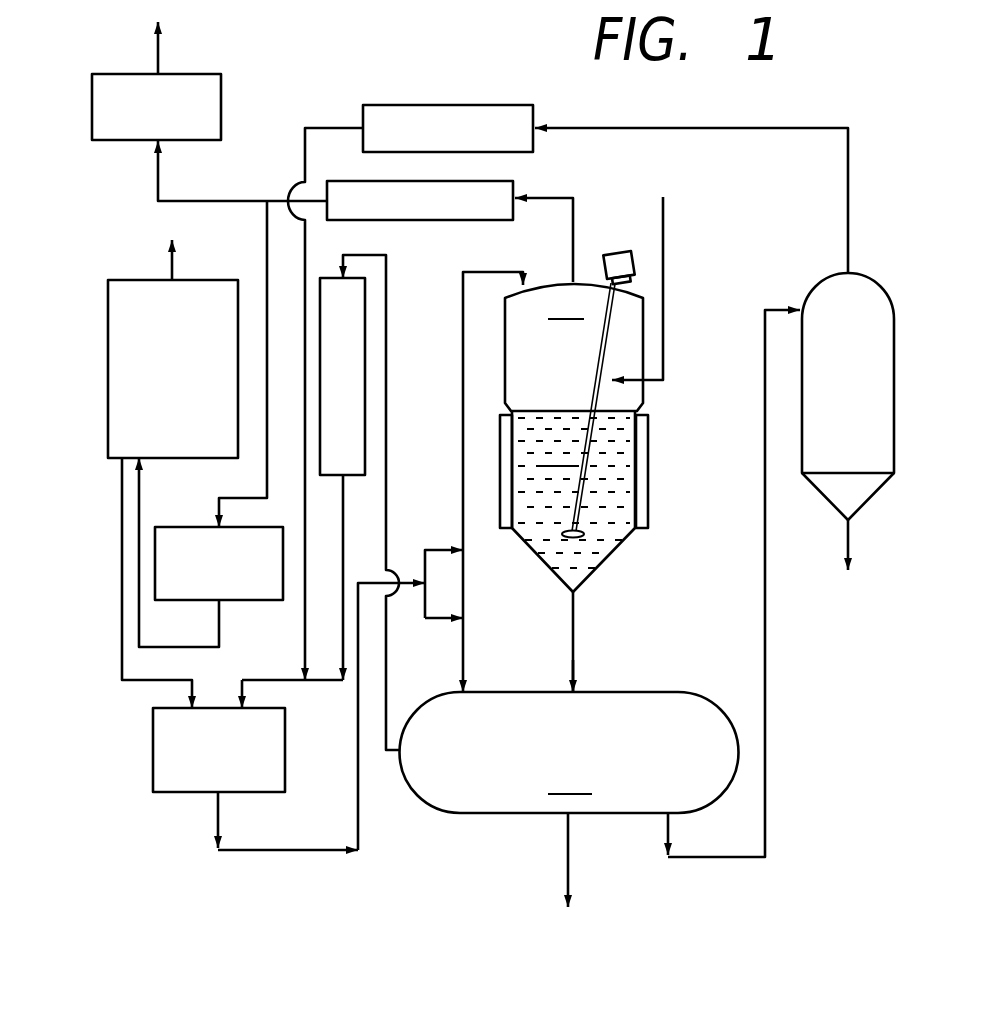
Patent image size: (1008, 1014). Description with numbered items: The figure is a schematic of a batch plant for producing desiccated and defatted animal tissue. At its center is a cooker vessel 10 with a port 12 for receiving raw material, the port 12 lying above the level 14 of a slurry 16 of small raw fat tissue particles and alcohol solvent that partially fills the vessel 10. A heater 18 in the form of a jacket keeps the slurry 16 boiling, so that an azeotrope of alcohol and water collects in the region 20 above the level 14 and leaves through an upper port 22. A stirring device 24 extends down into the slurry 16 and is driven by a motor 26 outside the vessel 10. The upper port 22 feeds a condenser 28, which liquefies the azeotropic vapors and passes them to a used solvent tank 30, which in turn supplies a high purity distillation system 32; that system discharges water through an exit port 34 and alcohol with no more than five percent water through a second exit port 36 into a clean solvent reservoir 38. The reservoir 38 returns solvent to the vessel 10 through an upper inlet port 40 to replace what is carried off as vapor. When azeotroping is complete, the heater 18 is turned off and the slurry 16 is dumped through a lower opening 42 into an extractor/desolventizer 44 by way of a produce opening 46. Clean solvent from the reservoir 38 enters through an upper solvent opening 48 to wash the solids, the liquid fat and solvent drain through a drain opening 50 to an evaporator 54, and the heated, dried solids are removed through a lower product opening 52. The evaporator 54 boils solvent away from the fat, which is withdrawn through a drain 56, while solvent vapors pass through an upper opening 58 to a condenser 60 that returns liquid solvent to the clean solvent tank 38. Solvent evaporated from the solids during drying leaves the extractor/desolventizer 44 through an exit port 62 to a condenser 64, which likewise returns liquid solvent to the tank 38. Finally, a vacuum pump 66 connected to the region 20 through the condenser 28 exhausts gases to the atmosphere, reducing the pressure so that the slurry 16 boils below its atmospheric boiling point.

The vessel 10 is at (697, 457).
The port 12 is at (648, 383).
The level 14 is at (556, 412).
The slurry 16 is at (574, 493).
The heater 18 is at (640, 505).
The region 20 is at (574, 347).
The upper port 22 is at (580, 278).
The stirring device 24 is at (578, 530).
The motor 26 is at (620, 255).
The condenser 28 is at (405, 213).
The used solvent tank 30 is at (207, 532).
The high purity distillation system 32 is at (112, 330).
The exit port 34 is at (170, 278).
The second exit port 36 is at (115, 462).
The clean solvent reservoir 38 is at (160, 748).
The upper inlet port 40 is at (530, 280).
The lower opening 42 is at (577, 594).
The extractor/desolventizer 44 is at (568, 752).
The produce opening 46 is at (578, 688).
The upper solvent opening 48 is at (470, 688).
The drain opening 50 is at (665, 818).
The lower product opening 52 is at (560, 818).
The evaporator 54 is at (875, 405).
The drain 56 is at (851, 523).
The upper opening 58 is at (852, 268).
The condenser 60 is at (417, 104).
The exit port 62 is at (394, 766).
The condenser 64 is at (362, 355).
The vacuum pump 66 is at (217, 97).